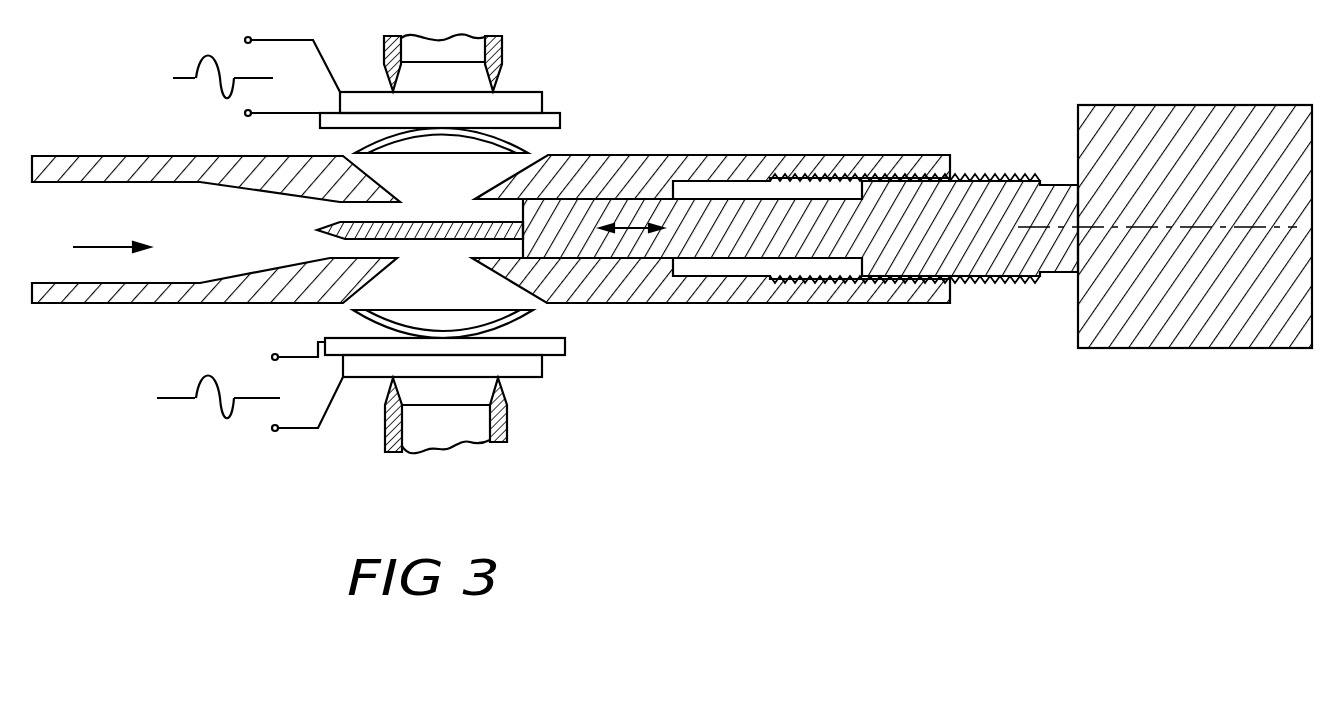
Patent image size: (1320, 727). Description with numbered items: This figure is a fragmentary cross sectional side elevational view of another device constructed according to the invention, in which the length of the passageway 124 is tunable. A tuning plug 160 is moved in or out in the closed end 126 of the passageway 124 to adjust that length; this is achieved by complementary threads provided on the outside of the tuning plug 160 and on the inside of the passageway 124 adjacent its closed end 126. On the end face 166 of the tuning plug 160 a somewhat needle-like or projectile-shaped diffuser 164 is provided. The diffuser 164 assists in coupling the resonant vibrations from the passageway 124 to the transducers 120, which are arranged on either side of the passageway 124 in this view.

The transducers 120 is at (526, 92).
The passageway 124 is at (206, 182).
The closed end 126 is at (462, 250).
The tuning plug 160 is at (803, 224).
The diffuser 164 is at (419, 220).
The end face 166 is at (521, 212).